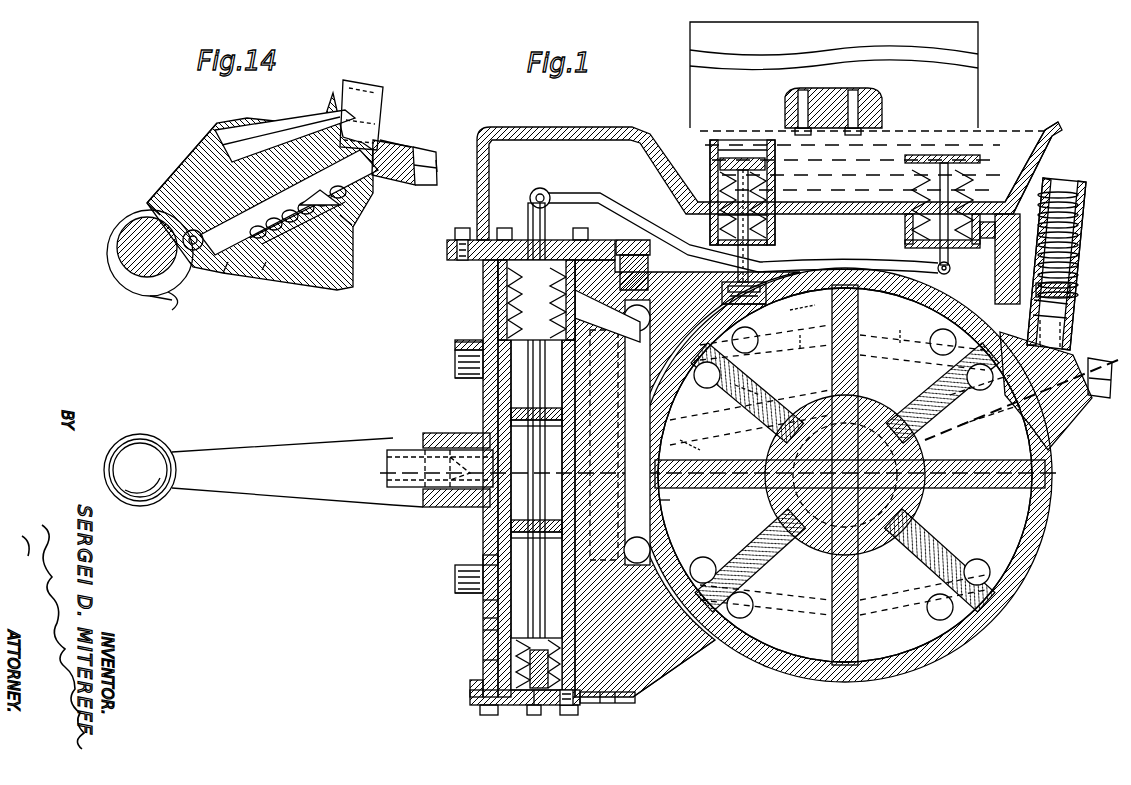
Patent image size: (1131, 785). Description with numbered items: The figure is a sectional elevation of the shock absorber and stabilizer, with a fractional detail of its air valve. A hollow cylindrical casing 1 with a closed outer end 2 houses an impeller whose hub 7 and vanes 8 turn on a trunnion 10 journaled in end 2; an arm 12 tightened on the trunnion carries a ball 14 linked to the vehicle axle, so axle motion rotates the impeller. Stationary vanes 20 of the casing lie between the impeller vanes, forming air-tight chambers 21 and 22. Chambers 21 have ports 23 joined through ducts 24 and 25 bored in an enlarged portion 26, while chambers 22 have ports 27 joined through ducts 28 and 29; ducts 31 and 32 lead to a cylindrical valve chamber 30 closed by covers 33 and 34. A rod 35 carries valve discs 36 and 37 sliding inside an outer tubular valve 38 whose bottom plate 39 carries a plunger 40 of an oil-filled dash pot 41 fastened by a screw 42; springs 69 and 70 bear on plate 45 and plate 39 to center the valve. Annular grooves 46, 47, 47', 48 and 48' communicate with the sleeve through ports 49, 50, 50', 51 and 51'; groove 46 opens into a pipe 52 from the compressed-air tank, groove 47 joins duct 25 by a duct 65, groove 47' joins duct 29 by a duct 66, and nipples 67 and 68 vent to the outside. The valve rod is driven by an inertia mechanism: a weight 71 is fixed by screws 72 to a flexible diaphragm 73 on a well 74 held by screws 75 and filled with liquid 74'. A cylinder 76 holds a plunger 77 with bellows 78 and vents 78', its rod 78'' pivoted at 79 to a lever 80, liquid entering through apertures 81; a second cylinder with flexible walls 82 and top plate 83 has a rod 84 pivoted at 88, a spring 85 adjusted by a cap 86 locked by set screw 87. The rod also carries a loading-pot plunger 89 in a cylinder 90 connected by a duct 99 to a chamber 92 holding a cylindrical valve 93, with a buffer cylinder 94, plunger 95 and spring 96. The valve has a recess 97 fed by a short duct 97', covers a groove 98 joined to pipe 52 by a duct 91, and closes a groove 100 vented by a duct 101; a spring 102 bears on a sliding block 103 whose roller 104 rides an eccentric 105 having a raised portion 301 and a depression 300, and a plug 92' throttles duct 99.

In FIG. 1, the hollow cylindrical casing 1 is at (1040, 547).
In FIG. 1, the closed outer end 2 is at (387, 467).
In FIG. 1, the hub 7 is at (915, 505).
In FIG. 1, the vanes 8 is at (1000, 480).
In FIG. 14, the trunnion 10 is at (158, 298).
In FIG. 1, the arm 12 is at (237, 447).
In FIG. 1, the ball 14 is at (148, 440).
In FIG. 1, the stationary vanes 20 is at (735, 466).
In FIG. 1, the chambers 21 is at (898, 680).
In FIG. 1, the chambers 22 is at (785, 680).
In FIG. 1, the ports 23 is at (758, 340).
In FIG. 1, the duct 24 is at (799, 438).
In FIG. 1, the duct 25 is at (675, 499).
In FIG. 1, the enlarged portion 26 is at (645, 688).
In FIG. 1, the ports 27 is at (706, 388).
In FIG. 1, the duct 28 is at (896, 438).
In FIG. 1, the duct 29 is at (700, 650).
In FIG. 1, the cylindrical valve chamber 30 is at (515, 650).
In FIG. 1, the duct 31 is at (585, 300).
In FIG. 1, the duct 32 is at (590, 705).
In FIG. 1, the cover 33 is at (510, 703).
In FIG. 1, the cover 34 is at (520, 245).
In FIG. 1, the rod 35 is at (482, 140).
In FIG. 1, the valve disc 36 is at (555, 405).
In FIG. 1, the valve disc 37 is at (490, 560).
In FIG. 1, the outer tubular valve 38 is at (492, 618).
In FIG. 1, the bottom plate 39 is at (495, 630).
In FIG. 1, the plunger 40 is at (495, 660).
In FIG. 1, the dash pot 41 is at (552, 704).
In FIG. 1, the bolt or screw 42 is at (532, 714).
In FIG. 1, the plate 45 is at (490, 305).
In FIG. 1, the annular groove 46 is at (445, 492).
In FIG. 1, the annular groove 47 is at (504, 542).
In FIG. 1, the annular groove 47' is at (493, 414).
In FIG. 1, the annular groove 48 is at (461, 609).
In FIG. 1, the annular groove 48' is at (464, 331).
In FIG. 1, the port 49 is at (440, 440).
In FIG. 1, the port 50 is at (504, 522).
In FIG. 1, the port 50' is at (503, 407).
In FIG. 1, the port 51 is at (450, 579).
In FIG. 1, the port 51' is at (451, 364).
In FIG. 1, the pipe 52 is at (418, 506).
In FIG. 1, the duct 65 is at (658, 520).
In FIG. 1, the duct 66 is at (455, 378).
In FIG. 1, the nipple 67 is at (455, 595).
In FIG. 1, the nipple 68 is at (458, 345).
In FIG. 1, the spring 69 is at (485, 283).
In FIG. 1, the spring 70 is at (480, 680).
In FIG. 1, the block or weight 71 is at (979, 78).
In FIG. 1, the screws 72 is at (876, 98).
In FIG. 1, the flexible diaphragm 73 is at (988, 130).
In FIG. 1, the well 74 is at (1052, 175).
In FIG. 1, the liquid 74' is at (1038, 122).
In FIG. 1, the screws 75 is at (458, 236).
In FIG. 1, the cylinder 76 is at (725, 160).
In FIG. 1, the plunger 77 is at (735, 190).
In FIG. 1, the flexible bellows 78 is at (678, 173).
In FIG. 1, the vents 78' is at (692, 159).
In FIG. 1, the rod 78'' is at (690, 117).
In FIG. 1, the pivot 79 is at (613, 197).
In FIG. 1, the lever 80 is at (560, 193).
In FIG. 1, the apertures 81 is at (530, 190).
In FIG. 1, the flexible walls 82 is at (912, 195).
In FIG. 1, the top plate 83 is at (943, 158).
In FIG. 1, the rod 84 is at (950, 256).
In FIG. 1, the compression spring 85 is at (905, 216).
In FIG. 1, the cap 86 is at (910, 237).
In FIG. 1, the set screw 87 is at (1018, 226).
In FIG. 1, the pivot 88 is at (952, 269).
In FIG. 1, the plunger 89 is at (750, 280).
In FIG. 1, the pot or cylinder 90 is at (695, 266).
In FIG. 14, the duct 91 is at (147, 200).
In FIG. 1, the duct 91 is at (687, 436).
In FIG. 14, the chamber 92 is at (404, 169).
In FIG. 14, the plug 92' is at (432, 165).
In FIG. 14, the cylindrical valve 93 is at (300, 272).
In FIG. 1, the cylinder 94 is at (1063, 319).
In FIG. 1, the plunger 95 is at (1072, 287).
In FIG. 1, the compression spring 96 is at (1078, 255).
In FIG. 14, the annular recess 97 is at (309, 177).
In FIG. 14, the short duct 97' is at (413, 139).
In FIG. 14, the annular groove 98 is at (368, 206).
In FIG. 14, the duct 99 is at (232, 121).
In FIG. 1, the duct 99 is at (808, 302).
In FIG. 14, the annular groove 100 is at (322, 140).
In FIG. 14, the duct 101 is at (352, 225).
In FIG. 14, the helical compression spring 102 is at (265, 270).
In FIG. 14, the sliding block 103 is at (228, 270).
In FIG. 14, the roller 104 is at (195, 252).
In FIG. 14, the eccentric 105 is at (125, 275).
In FIG. 14, the depression 300 is at (172, 308).
In FIG. 14, the raised portion 301 is at (143, 214).